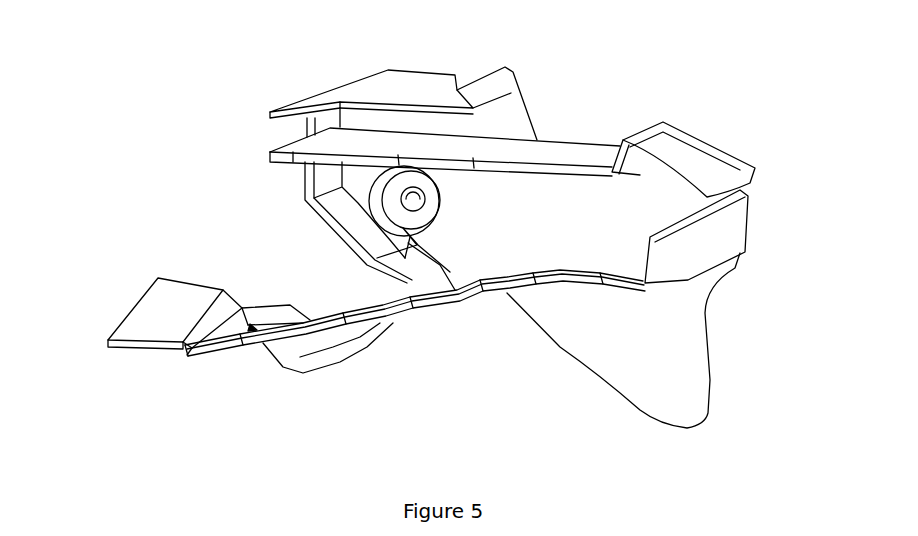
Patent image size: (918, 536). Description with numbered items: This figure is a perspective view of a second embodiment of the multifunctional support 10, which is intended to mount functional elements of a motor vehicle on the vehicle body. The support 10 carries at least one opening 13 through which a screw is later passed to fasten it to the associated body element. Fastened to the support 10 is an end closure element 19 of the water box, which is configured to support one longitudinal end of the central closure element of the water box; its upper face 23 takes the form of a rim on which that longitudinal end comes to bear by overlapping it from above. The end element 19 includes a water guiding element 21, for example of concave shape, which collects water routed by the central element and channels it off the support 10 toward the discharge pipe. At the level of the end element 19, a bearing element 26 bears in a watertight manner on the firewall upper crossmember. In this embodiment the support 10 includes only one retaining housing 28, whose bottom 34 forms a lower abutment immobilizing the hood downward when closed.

The multifunctional support 10 is at (588, 83).
The opening 13 is at (413, 211).
The end closure element 19 is at (463, 300).
The water guiding element 21 is at (310, 307).
The upper face 23 is at (543, 272).
The bearing element 26 is at (180, 303).
The retaining housing 28 is at (470, 118).
The bottom 34 is at (558, 158).